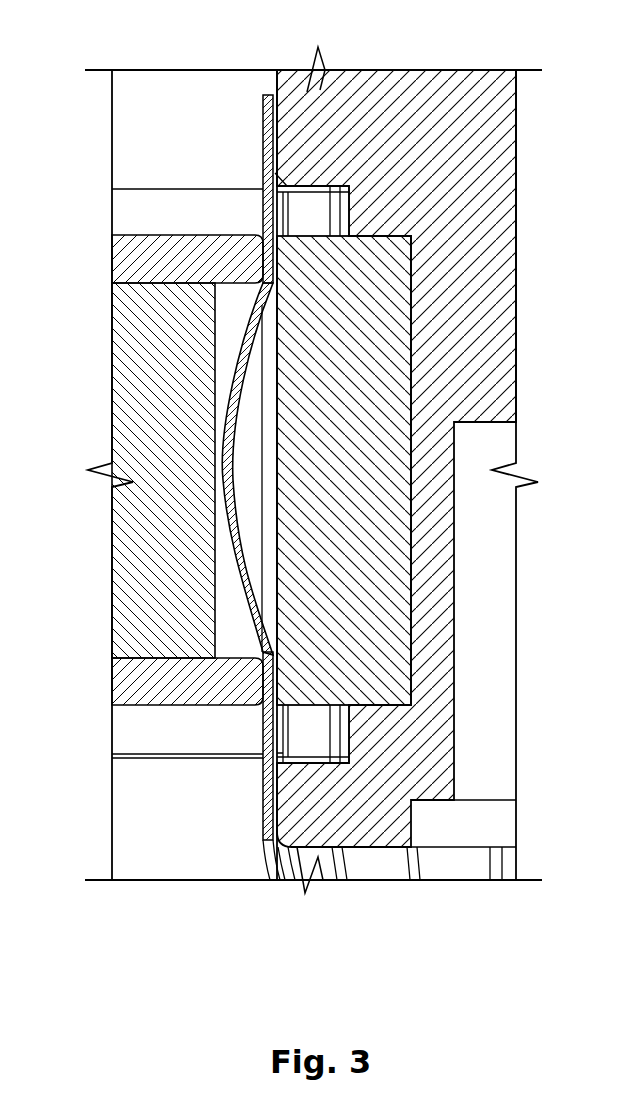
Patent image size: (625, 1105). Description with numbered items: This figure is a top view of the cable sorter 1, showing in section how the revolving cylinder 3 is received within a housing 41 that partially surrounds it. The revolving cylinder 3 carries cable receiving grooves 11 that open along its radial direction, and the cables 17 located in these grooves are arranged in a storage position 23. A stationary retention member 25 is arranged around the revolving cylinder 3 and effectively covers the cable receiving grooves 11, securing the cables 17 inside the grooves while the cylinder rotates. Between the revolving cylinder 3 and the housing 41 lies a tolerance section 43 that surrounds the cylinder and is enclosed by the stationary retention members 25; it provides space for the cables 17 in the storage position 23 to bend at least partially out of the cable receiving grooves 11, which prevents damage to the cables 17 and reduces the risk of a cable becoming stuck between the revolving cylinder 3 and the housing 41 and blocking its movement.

The cable sorter 1 is at (194, 90).
The revolving cylinder 3 is at (345, 353).
The cable receiving grooves 11 is at (282, 269).
The cables 17 is at (269, 134).
The storage position 23 is at (249, 339).
The stationary retention member 25 is at (123, 262).
The housing 41 is at (122, 417).
The tolerance section 43 is at (233, 333).